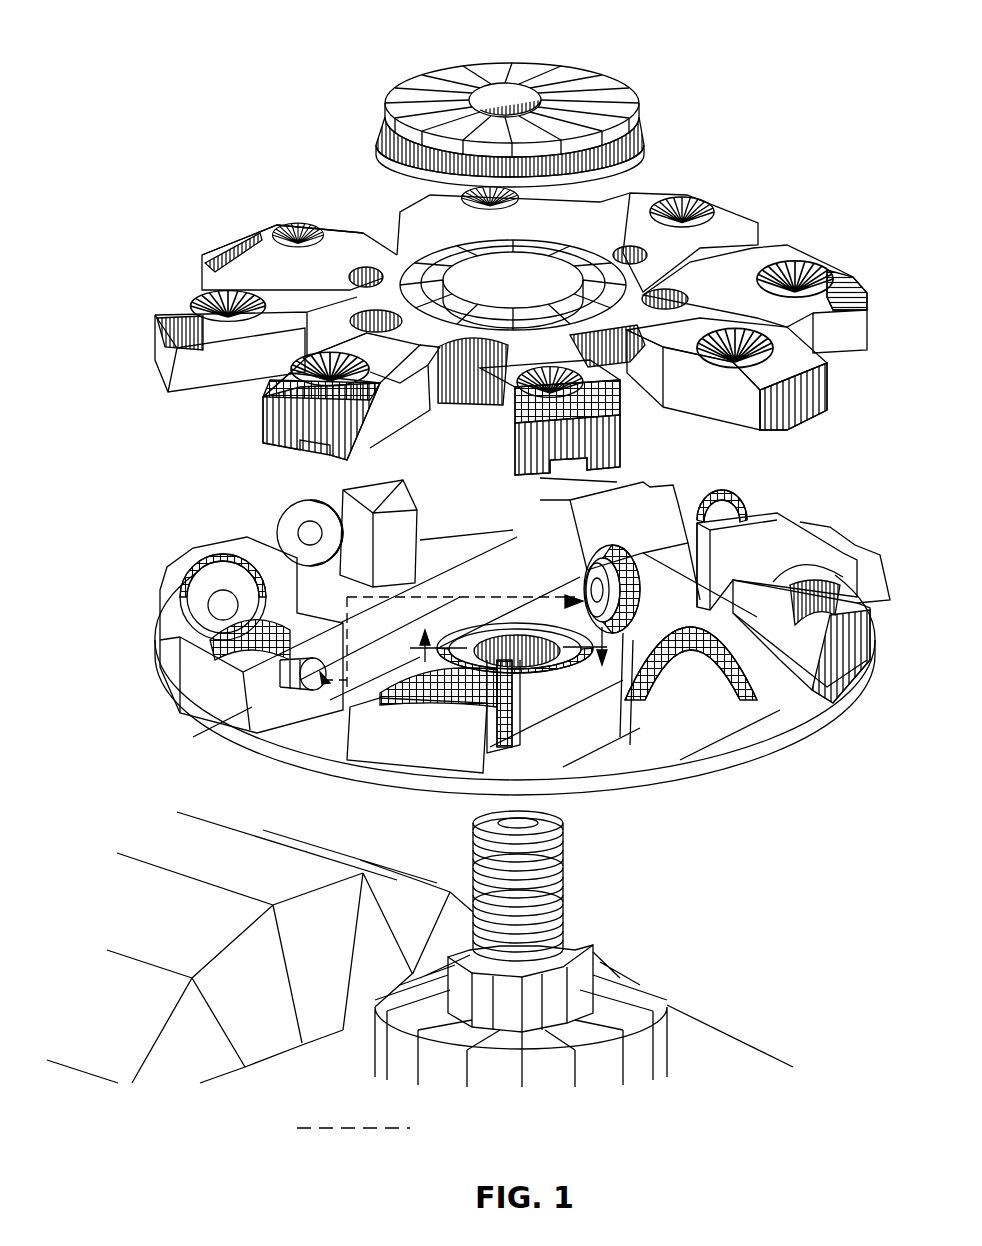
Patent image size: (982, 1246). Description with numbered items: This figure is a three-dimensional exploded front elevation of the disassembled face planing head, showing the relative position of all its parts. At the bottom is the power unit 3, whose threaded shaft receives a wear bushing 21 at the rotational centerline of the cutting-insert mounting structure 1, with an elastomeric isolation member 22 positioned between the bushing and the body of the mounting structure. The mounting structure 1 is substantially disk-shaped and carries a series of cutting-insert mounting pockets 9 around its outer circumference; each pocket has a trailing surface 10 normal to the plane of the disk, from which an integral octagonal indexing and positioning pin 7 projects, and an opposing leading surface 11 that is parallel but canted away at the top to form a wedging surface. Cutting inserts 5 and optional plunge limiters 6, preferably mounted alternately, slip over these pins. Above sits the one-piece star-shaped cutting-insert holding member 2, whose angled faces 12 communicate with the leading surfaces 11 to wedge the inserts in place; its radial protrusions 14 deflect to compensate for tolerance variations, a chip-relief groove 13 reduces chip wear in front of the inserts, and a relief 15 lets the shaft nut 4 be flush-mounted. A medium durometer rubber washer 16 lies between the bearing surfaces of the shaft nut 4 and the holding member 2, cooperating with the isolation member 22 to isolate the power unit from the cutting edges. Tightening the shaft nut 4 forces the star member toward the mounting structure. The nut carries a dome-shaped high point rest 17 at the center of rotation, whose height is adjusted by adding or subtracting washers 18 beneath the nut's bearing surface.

The cutting-insert mounting structure 1 is at (175, 686).
The cutting-insert holding member 2 is at (152, 327).
The power unit 3 is at (612, 906).
The shaft nut 4 is at (603, 80).
The cutting insert 5 is at (322, 497).
The plunge limiter 6 is at (228, 545).
The indexing and positioning pin 7 is at (290, 688).
The cutting-insert mounting pocket 9 is at (780, 705).
The trailing surface 10 is at (292, 705).
The leading surface 11 is at (808, 660).
The faces 12 is at (620, 437).
The chip-relief groove 13 is at (808, 262).
The radial protrusion 14 is at (692, 275).
The relief 15 is at (531, 262).
The rubber washer 16 is at (430, 290).
The high point rest 17 is at (512, 92).
The washer 18 is at (646, 150).
The wear bushing 21 is at (548, 680).
The elastomeric isolation member 22 is at (500, 605).